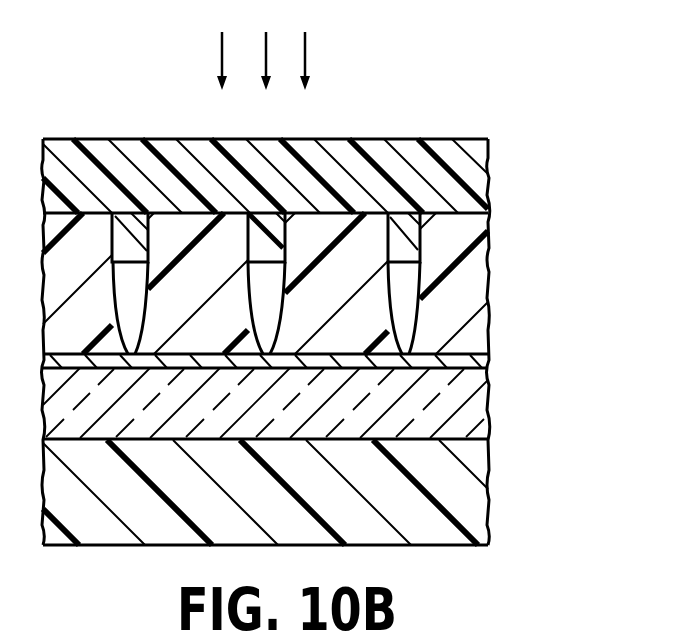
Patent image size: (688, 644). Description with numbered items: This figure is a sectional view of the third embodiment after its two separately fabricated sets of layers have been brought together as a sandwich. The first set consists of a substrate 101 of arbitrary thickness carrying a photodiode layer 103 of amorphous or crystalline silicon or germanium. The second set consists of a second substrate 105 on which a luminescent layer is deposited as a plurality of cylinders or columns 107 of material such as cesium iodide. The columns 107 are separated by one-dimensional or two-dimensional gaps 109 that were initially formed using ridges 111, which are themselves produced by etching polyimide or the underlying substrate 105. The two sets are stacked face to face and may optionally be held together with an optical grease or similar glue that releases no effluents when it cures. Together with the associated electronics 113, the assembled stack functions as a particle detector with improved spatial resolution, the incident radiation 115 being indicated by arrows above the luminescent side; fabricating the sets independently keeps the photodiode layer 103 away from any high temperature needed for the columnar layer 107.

The substrate 101 is at (490, 490).
The photodiode layer 103 is at (490, 418).
The second substrate 105 is at (490, 180).
The columns of luminescent material 107 is at (490, 272).
The gaps 109 is at (402, 312).
The ridges 111 is at (257, 260).
The associated electronics 113 is at (490, 362).
The ion implantation / irradiation 115 is at (222, 53).